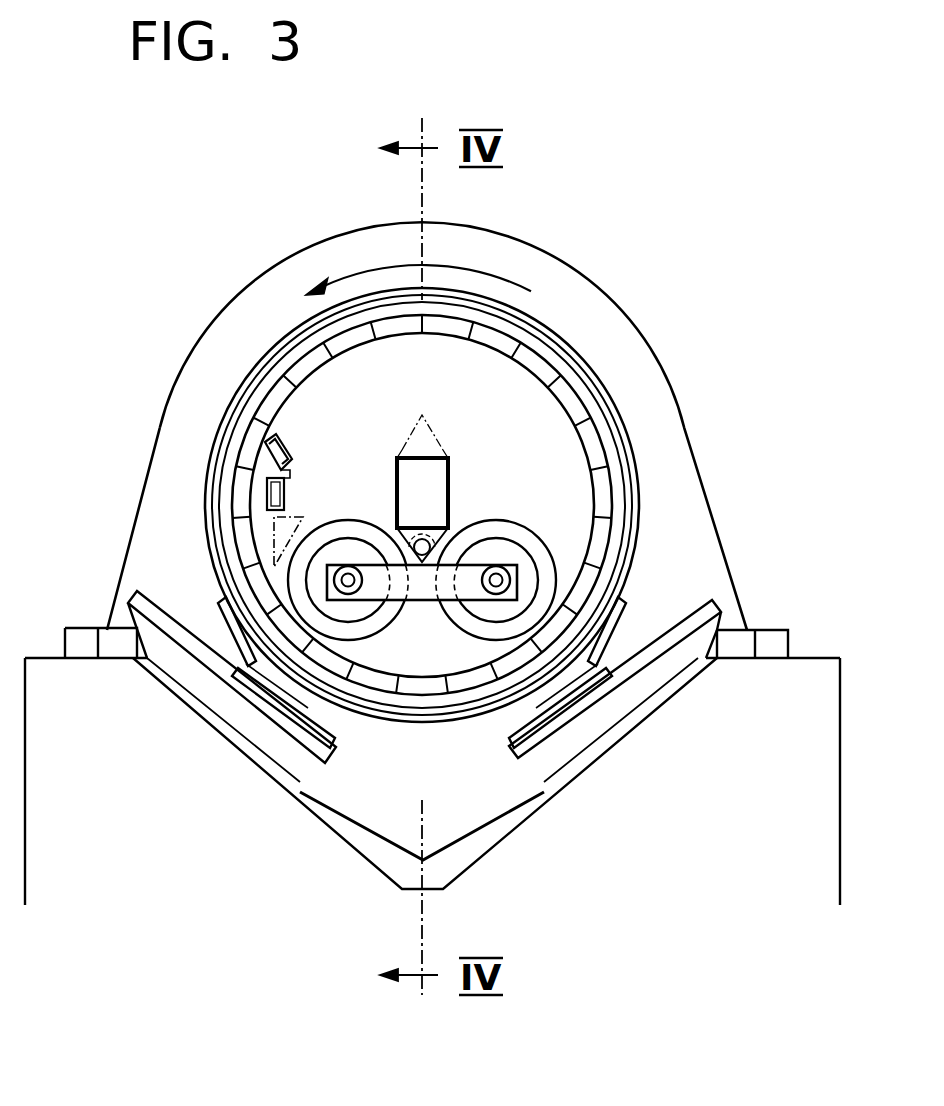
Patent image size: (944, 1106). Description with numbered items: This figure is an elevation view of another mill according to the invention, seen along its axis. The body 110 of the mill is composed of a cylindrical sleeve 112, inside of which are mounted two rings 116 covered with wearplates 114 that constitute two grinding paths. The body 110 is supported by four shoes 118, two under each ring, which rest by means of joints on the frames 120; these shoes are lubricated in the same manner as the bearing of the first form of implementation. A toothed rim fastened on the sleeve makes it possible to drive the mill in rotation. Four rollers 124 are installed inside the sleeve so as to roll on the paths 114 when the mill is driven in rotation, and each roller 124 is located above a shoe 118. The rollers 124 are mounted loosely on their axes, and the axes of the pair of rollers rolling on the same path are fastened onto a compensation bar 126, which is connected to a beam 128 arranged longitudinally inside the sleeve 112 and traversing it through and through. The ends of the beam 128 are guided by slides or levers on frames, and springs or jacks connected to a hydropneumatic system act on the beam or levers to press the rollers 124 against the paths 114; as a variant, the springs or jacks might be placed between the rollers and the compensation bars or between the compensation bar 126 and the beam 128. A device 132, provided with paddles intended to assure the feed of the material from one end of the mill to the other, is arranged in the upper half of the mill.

The body 110 is at (597, 305).
The cylindrical sleeve 112 is at (595, 368).
The wearplates 114 is at (597, 455).
The rings 116 is at (597, 408).
The shoes 118 is at (273, 678).
The frames 120 is at (265, 748).
The rollers 124 is at (348, 526).
The compensation bar 126 is at (422, 600).
The beam 128 is at (396, 472).
The device 132 is at (266, 452).